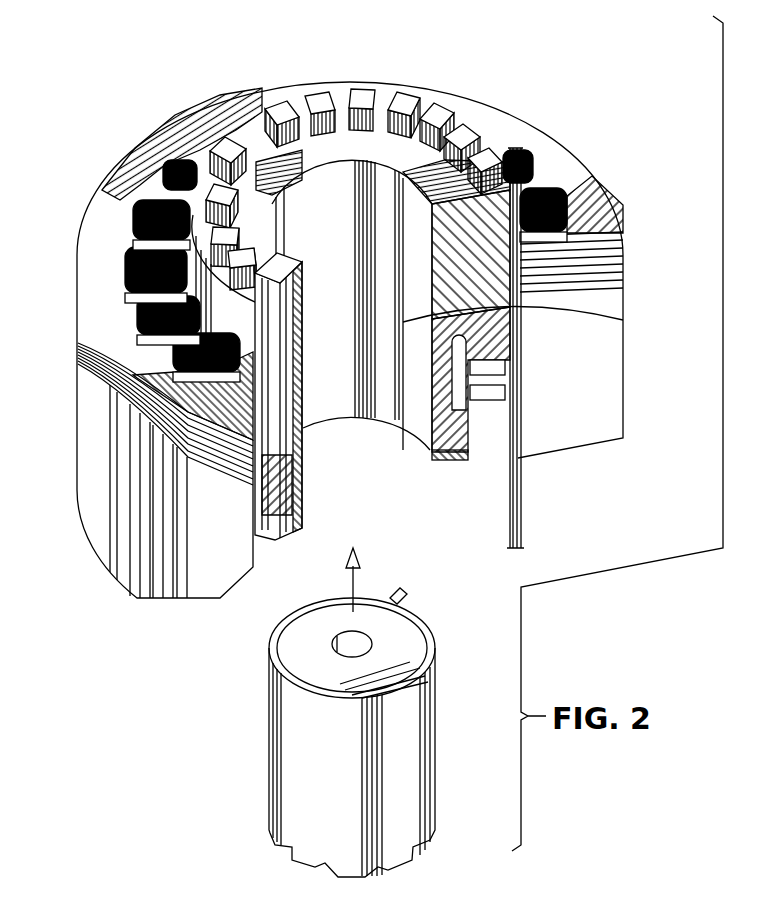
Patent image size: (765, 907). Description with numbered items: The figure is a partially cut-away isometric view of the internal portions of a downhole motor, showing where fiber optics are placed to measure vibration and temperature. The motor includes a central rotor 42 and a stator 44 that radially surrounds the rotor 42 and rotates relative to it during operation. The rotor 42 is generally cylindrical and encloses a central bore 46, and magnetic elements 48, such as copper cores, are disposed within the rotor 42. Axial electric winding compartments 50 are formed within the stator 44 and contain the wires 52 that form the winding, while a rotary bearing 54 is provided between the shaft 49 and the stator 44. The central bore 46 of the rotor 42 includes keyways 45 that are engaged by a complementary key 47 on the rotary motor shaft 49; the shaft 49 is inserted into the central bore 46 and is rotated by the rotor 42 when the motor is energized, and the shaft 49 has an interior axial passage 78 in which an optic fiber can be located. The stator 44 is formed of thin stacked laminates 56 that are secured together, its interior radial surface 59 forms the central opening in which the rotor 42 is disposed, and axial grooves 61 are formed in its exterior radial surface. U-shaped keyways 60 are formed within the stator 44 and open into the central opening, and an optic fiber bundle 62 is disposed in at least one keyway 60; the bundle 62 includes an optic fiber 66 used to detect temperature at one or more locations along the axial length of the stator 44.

The rotor 42 is at (315, 155).
The stator 44 is at (565, 155).
The keyways 45 is at (397, 186).
The central bore 46 is at (275, 195).
The key 47 is at (398, 593).
The magnetic elements 48 is at (213, 147).
The motor shaft 49 is at (436, 778).
The axial electric winding compartments 50 is at (133, 233).
The wires 52 is at (513, 150).
The rotary bearing 54 is at (495, 417).
The laminates 56 is at (618, 252).
The interior radial surface 59 is at (258, 537).
The keyways 60 is at (623, 320).
The axial grooves 61 is at (185, 600).
The optic fiber bundle 62 is at (520, 500).
The optic fiber 66 is at (146, 201).
The interior axial passage 78 is at (368, 643).